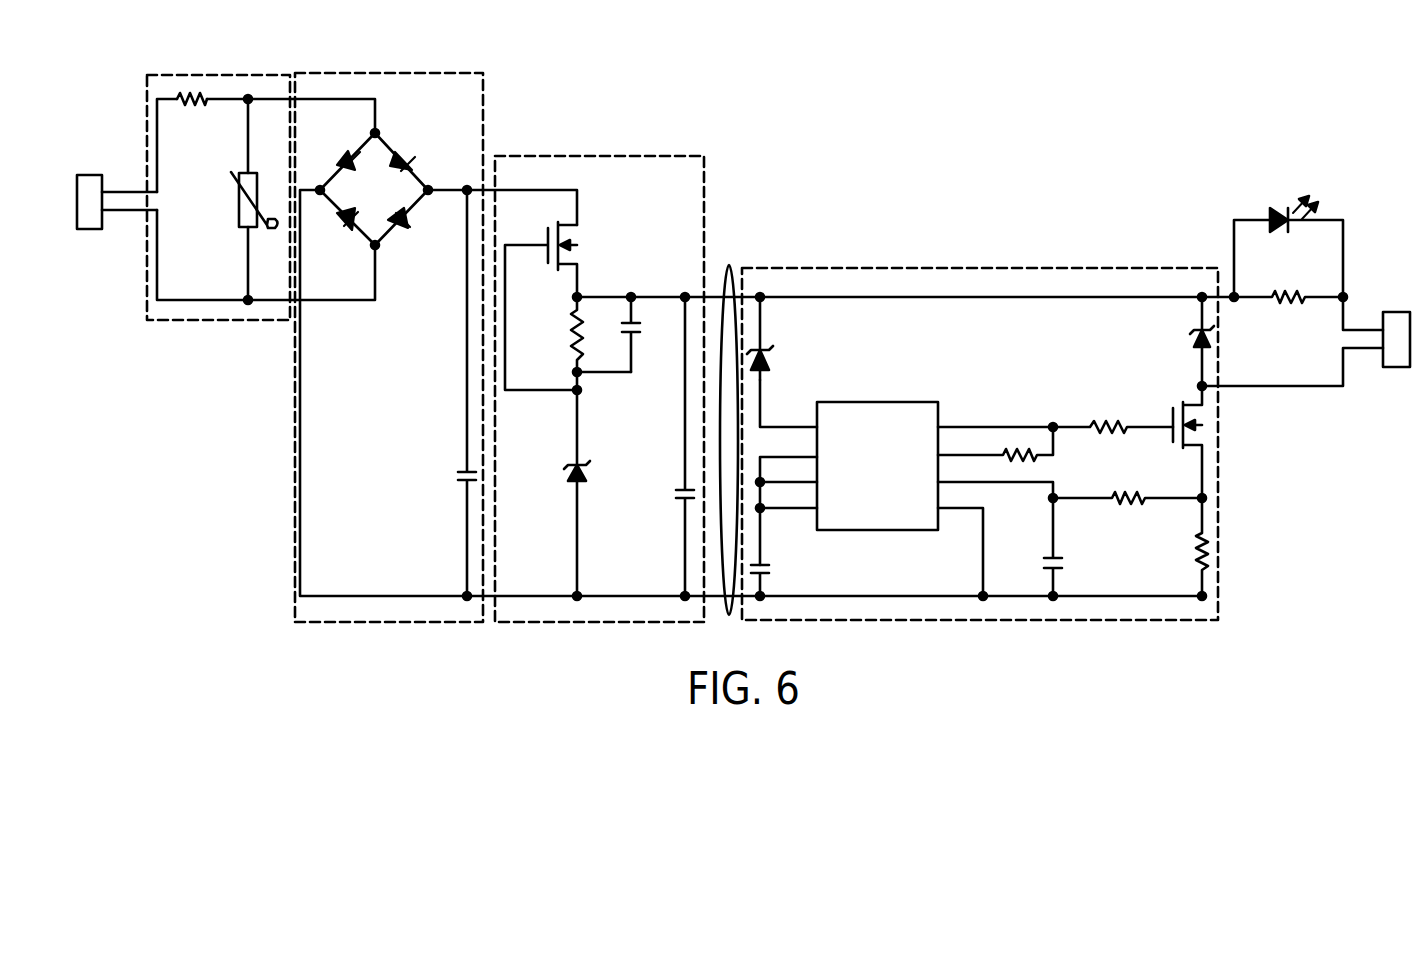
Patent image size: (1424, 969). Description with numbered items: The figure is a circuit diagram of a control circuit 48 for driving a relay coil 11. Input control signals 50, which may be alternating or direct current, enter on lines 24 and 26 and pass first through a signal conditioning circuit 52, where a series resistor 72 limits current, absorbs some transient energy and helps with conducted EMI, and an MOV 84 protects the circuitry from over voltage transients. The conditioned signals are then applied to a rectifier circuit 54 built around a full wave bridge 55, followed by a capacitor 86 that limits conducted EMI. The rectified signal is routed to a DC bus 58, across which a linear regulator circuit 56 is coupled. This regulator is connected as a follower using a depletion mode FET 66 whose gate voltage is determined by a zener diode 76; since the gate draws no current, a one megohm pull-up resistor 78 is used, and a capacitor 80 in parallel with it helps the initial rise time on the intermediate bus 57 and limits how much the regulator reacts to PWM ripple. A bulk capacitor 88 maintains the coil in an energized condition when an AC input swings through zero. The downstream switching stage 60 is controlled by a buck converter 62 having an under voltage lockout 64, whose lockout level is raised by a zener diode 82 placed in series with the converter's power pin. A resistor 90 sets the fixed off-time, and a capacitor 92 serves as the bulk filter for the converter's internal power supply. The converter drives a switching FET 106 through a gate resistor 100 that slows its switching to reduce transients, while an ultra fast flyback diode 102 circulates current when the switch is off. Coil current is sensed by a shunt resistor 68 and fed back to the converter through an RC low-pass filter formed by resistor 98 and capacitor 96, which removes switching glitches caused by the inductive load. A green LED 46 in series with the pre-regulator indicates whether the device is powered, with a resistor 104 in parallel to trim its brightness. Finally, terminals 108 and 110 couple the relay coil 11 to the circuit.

The relay coil 11 is at (1395, 312).
The line 24 is at (118, 188).
The line 26 is at (120, 214).
The LED 46 is at (1287, 208).
The control circuit 48 is at (864, 96).
The input control signals 50 is at (88, 175).
The signal conditioning circuit 52 is at (257, 73).
The rectifier circuit 54 is at (382, 73).
The full wave bridge 55 is at (388, 142).
The linear regulator circuit 56 is at (597, 156).
The intermediate bus 57 is at (777, 416).
The DC bus 58 is at (722, 280).
The LED controller stage 60 is at (980, 268).
The buck converter 62 is at (876, 402).
The under voltage lockout 64 is at (806, 426).
The depletion mode FET 66 is at (568, 231).
The shunt resistor 68 is at (1212, 553).
The resistor 72 is at (192, 92).
The zener diode 76 is at (592, 470).
The pull-up resistor 78 is at (570, 338).
The capacitor 80 is at (633, 322).
The zener diode 82 is at (770, 356).
The MOV 84 is at (237, 200).
The capacitor 86 is at (465, 486).
The capacitor 88 is at (680, 500).
The resistor 90 is at (1016, 455).
The capacitor 92 is at (768, 565).
The capacitor 96 is at (1048, 565).
The resistor 98 is at (1128, 506).
The gate resistor 100 is at (1110, 426).
The diode 102 is at (1196, 340).
The resistor 104 is at (1285, 292).
The switching FET 106 is at (1210, 430).
The terminal 108 is at (1355, 330).
The terminal 110 is at (1360, 350).